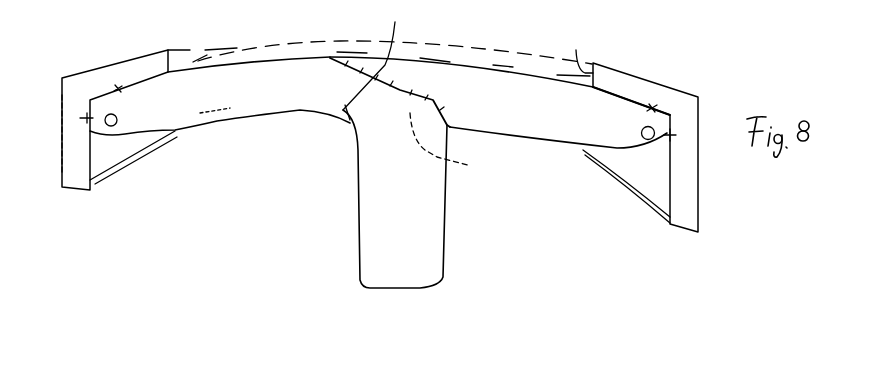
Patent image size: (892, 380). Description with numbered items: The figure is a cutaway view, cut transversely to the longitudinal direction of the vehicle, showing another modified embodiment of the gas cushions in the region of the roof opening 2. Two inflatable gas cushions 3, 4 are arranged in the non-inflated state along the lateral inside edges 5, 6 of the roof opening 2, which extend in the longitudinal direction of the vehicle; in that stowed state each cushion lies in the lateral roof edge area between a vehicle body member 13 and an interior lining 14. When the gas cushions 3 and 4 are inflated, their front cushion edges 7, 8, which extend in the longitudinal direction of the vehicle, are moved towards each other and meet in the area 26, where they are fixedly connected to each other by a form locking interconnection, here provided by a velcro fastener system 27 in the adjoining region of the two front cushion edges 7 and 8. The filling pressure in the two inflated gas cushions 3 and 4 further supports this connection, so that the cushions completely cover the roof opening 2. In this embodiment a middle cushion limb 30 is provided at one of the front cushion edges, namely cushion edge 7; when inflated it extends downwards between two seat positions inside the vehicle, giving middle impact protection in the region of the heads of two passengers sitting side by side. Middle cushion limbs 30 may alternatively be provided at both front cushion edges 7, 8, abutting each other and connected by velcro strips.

The roof opening 2 is at (361, 41).
The inflatable gas cushion 3 is at (220, 96).
The inflatable gas cushion 4 is at (532, 124).
The lateral inside edge 5 is at (190, 50).
The lateral inside edge 6 is at (576, 50).
The front cushion edge 7 is at (450, 146).
The front cushion edge 8 is at (377, 55).
The vehicle body member 13 is at (97, 80).
The interior lining 14 is at (130, 163).
The area where the two front cushion edges meet 26 is at (345, 105).
The velcro fastener system 27 is at (407, 87).
The middle cushion limb 30 is at (406, 239).